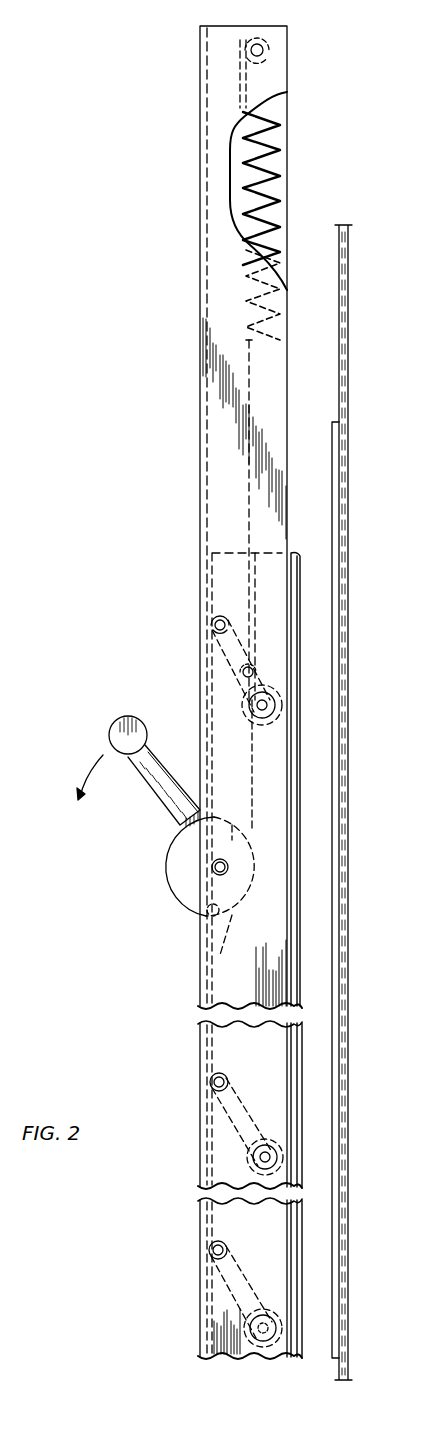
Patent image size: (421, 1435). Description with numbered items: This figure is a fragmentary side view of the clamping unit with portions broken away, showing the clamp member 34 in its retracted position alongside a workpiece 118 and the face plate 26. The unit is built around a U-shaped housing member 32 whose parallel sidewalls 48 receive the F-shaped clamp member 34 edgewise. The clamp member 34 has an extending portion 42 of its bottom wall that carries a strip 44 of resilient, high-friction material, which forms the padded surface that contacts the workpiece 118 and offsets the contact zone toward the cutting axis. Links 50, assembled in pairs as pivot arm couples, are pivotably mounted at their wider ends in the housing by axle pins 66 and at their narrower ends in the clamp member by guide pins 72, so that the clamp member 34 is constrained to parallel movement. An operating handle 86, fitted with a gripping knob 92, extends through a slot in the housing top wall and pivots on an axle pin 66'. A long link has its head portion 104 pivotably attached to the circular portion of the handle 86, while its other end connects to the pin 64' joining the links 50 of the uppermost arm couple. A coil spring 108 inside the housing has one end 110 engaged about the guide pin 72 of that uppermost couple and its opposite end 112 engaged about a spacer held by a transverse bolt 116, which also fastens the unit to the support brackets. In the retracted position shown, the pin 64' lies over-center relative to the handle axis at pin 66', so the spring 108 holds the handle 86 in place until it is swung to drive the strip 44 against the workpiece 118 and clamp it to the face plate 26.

The face plate 26 is at (348, 365).
The housing member 32 is at (199, 290).
The clamp member 34 is at (303, 606).
The extending portion 42 is at (292, 706).
The strip 44 is at (301, 679).
The sidewalls 48 is at (222, 1042).
The links 50 is at (222, 665).
The pin 64' is at (200, 885).
The axle pin 66 is at (240, 1070).
The axle pin 66' is at (169, 873).
The guide pin 72 is at (275, 1306).
The operating handle 86 is at (148, 722).
The knob 92 is at (119, 726).
The head portion 104 is at (222, 960).
The coil spring 108 is at (288, 196).
The spring end 110 is at (250, 458).
The spring end 112 is at (250, 120).
The transverse bolt 116 is at (263, 50).
The workpiece 118 is at (333, 475).